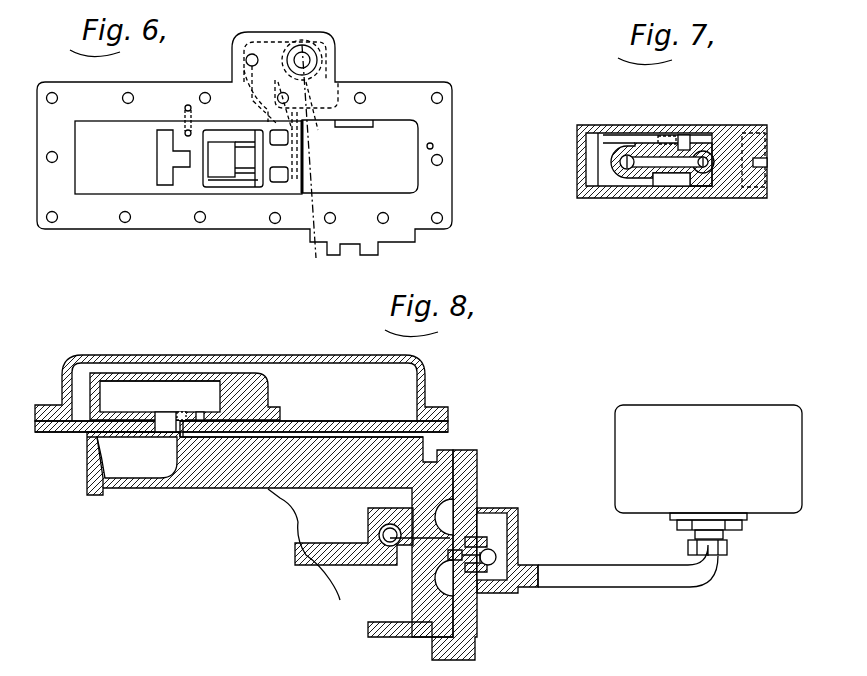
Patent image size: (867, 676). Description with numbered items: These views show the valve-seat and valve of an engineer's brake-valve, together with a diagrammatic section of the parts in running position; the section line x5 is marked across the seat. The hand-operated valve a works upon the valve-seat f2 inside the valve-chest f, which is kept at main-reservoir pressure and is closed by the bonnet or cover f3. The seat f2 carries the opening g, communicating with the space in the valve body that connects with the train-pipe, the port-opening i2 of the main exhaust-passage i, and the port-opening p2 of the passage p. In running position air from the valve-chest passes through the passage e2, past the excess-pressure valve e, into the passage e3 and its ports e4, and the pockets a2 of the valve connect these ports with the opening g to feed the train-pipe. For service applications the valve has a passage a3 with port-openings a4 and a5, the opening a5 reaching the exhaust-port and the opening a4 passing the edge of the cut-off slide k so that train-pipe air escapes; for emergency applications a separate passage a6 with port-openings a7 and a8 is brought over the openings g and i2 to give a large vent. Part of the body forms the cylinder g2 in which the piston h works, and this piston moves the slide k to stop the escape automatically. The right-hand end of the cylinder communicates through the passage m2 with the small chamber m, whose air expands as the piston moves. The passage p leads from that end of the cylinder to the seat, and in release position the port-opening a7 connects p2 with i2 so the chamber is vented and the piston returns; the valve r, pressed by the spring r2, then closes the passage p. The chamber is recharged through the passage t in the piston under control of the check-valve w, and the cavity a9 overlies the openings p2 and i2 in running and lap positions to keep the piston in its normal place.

In FIG. 7, the hand-operated valve a is at (738, 128).
In FIG. 8, the hand-operated valve a is at (191, 396).
In FIG. 7, the pockets or cavities a2 is at (778, 150).
In FIG. 7, the passage a3 is at (657, 165).
In FIG. 7, the port-opening a4 is at (703, 172).
In FIG. 7, the port-opening a5 is at (627, 176).
In FIG. 7, the passage a6 is at (640, 142).
In FIG. 8, the passage a6 is at (160, 395).
In FIG. 7, the port-opening a7 is at (677, 182).
In FIG. 8, the port-opening a7 is at (200, 412).
In FIG. 7, the port-opening a8 is at (594, 158).
In FIG. 8, the port-opening a8 is at (92, 452).
In FIG. 7, the pocket or cavity a9 is at (667, 147).
In FIG. 8, the pocket or cavity a9 is at (181, 412).
In FIG. 6, the excess-pressure valve e is at (310, 57).
In FIG. 6, the passage e2 is at (340, 83).
In FIG. 6, the passage e3 is at (243, 80).
In FIG. 6, the ports e4 is at (282, 175).
In FIG. 6, the valve-chest f is at (360, 156).
In FIG. 8, the valve-chest f is at (392, 399).
In FIG. 6, the valve-seat f2 is at (244, 143).
In FIG. 8, the valve-seat f2 is at (320, 402).
In FIG. 8, the bonnet or cover f3 is at (424, 381).
In FIG. 6, the port or opening g is at (243, 182).
In FIG. 8, the cylinder g2 is at (363, 590).
In FIG. 8, the piston h is at (432, 607).
In FIG. 8, the main exhaust-passage i is at (137, 457).
In FIG. 6, the port-opening i2 is at (173, 157).
In FIG. 8, the port-opening i2 is at (164, 430).
In FIG. 6, the cut-off slide k is at (233, 158).
In FIG. 8, the small reservoir or chamber m is at (708, 480).
In FIG. 8, the passage m2 is at (617, 572).
In FIG. 6, the passage p is at (433, 146).
In FIG. 8, the passage p is at (285, 437).
In FIG. 6, the port-opening p2 is at (185, 132).
In FIG. 8, the port-opening p2 is at (181, 440).
In FIG. 8, the valve r is at (497, 553).
In FIG. 8, the spring r2 is at (470, 570).
In FIG. 8, the passage t is at (410, 568).
In FIG. 8, the check-valve w is at (380, 534).
In FIG. 6, the section line x5 is at (301, 50).